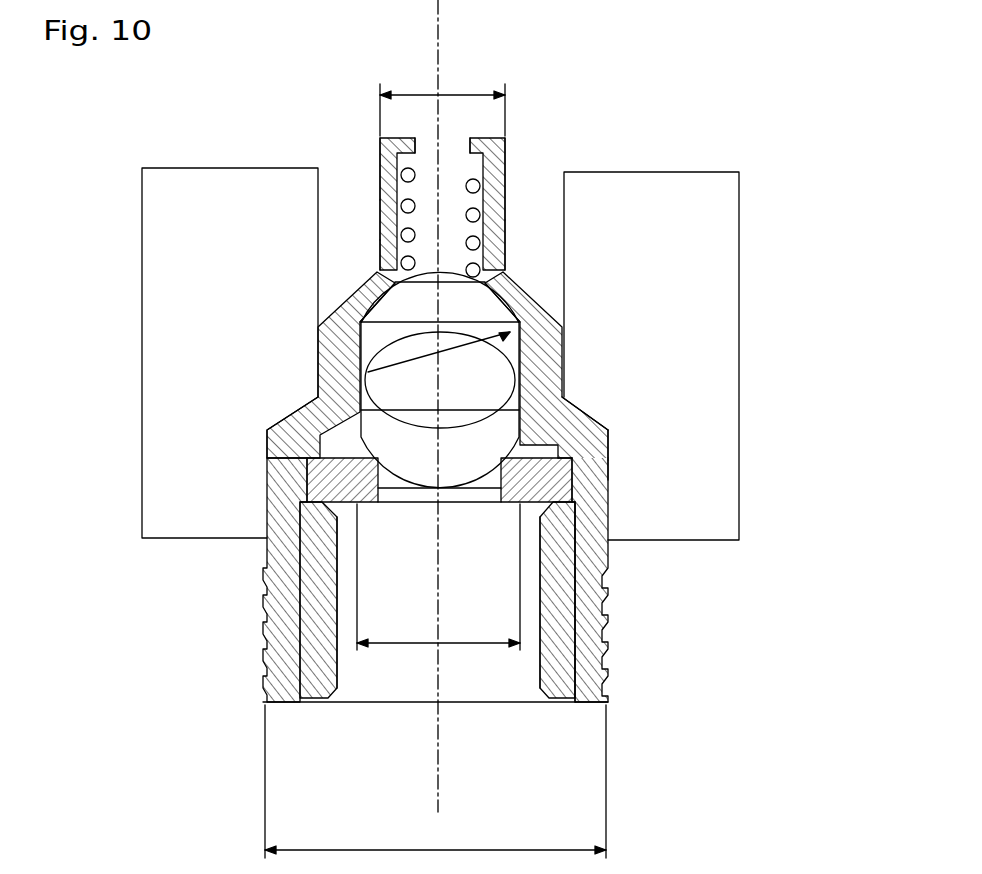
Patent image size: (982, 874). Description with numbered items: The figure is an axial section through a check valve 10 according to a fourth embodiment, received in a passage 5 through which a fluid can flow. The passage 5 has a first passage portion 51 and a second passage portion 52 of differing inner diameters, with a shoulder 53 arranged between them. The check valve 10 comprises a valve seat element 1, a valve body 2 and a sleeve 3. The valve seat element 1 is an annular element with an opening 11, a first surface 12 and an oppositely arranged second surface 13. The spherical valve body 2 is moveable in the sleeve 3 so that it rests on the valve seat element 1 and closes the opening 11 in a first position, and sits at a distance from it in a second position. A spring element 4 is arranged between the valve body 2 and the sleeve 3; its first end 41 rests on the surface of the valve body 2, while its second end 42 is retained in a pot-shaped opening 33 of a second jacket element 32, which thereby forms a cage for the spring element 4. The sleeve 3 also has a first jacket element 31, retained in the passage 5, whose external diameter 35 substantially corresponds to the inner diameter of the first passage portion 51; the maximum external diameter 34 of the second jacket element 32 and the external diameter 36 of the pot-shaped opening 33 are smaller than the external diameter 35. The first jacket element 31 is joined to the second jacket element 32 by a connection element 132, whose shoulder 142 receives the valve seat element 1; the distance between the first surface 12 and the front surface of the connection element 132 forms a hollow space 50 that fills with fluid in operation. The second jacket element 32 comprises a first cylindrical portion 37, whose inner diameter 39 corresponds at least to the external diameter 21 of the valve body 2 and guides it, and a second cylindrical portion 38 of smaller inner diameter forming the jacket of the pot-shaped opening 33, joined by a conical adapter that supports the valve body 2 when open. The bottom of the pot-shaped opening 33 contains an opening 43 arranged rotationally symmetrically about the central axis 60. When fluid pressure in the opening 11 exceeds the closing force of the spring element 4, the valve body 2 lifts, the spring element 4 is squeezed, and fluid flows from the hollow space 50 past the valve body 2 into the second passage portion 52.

The valve seat element 1 is at (265, 500).
The valve body 2 is at (505, 348).
The sleeve 3 is at (318, 343).
The spring element 4 is at (483, 274).
The passage 5 is at (543, 163).
The check valve 10 is at (645, 90).
The opening 11 is at (422, 504).
The first surface 12 is at (265, 462).
The second surface 13 is at (300, 510).
The diameter of the valve body 21 is at (318, 368).
The first jacket element 31 is at (608, 647).
The second jacket element 32 is at (380, 215).
The pot-shaped opening 33 is at (505, 207).
The maximum external diameter 34 is at (480, 93).
The external diameter 35 is at (435, 781).
The external diameter of the pot-shaped opening 36 is at (442, 210).
The first cylindrical portion 37 is at (563, 374).
The second cylindrical portion 38 is at (505, 233).
The inner diameter 39 is at (498, 647).
The first end 41 is at (380, 258).
The second end 42 is at (380, 167).
The opening 43 is at (442, 140).
The hollow space 50 is at (609, 450).
The first passage portion 51 is at (635, 540).
The second passage portion 52 is at (257, 175).
The shoulder 53 is at (293, 411).
The central axis 60 is at (439, 750).
The connection element 132 is at (600, 422).
The shoulder 142 is at (609, 468).